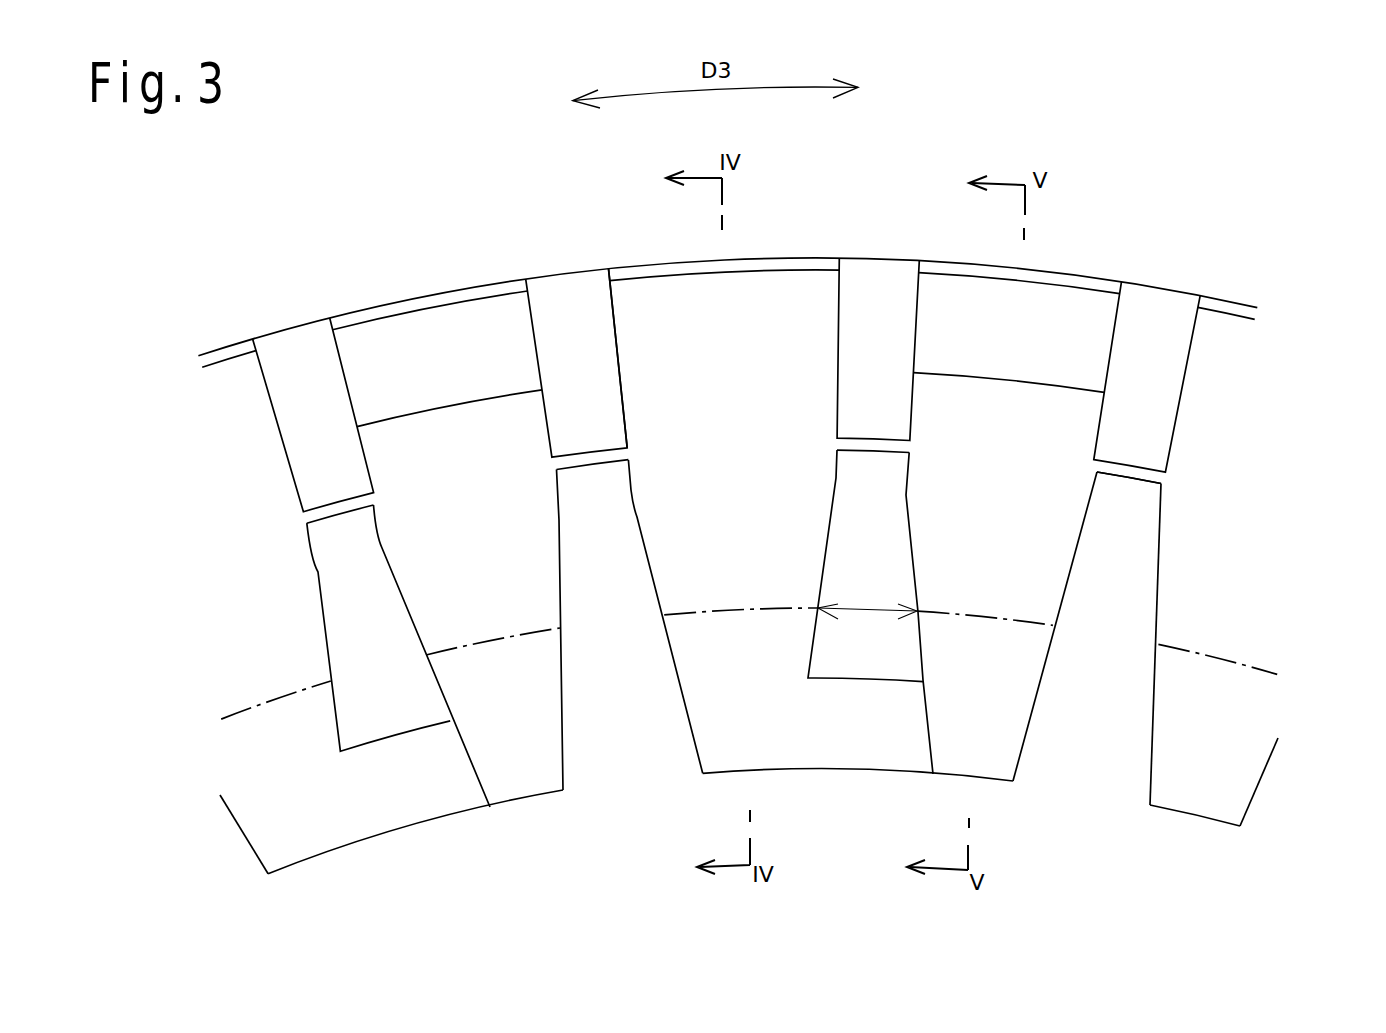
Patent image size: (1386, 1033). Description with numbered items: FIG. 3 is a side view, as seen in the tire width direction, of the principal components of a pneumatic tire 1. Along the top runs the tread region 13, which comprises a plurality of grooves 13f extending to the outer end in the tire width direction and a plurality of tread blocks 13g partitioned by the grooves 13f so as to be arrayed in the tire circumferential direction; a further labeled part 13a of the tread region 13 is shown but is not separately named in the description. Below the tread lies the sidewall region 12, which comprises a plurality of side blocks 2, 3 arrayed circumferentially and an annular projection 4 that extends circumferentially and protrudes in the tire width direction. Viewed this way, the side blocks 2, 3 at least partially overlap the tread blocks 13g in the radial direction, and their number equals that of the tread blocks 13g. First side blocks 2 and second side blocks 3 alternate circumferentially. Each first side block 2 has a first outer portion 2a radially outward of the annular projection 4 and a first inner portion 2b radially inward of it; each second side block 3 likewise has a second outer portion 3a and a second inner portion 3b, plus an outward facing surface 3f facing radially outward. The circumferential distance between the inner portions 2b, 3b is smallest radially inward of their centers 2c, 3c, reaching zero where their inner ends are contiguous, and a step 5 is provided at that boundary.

The stator 1 is at (1272, 120).
The first side block 2 is at (386, 835).
The first outer portion 2a is at (620, 395).
The first inner portion 2b is at (668, 653).
The center of first inner portion 2c is at (737, 612).
The second side block 3 is at (519, 794).
The second outer portion 3a is at (1107, 466).
The second inner portion 3b is at (1047, 670).
The center of second inner portion 3c is at (982, 614).
The outward facing surface 3f is at (445, 400).
The annular projection 4 is at (875, 458).
The step 5 is at (933, 735).
The sidewall region 12 is at (1276, 533).
The tread region 13 is at (1175, 226).
The inner peripheral surface of yoke 13a is at (1208, 292).
The grooves 13f is at (297, 338).
The tread blocks 13g is at (468, 298).